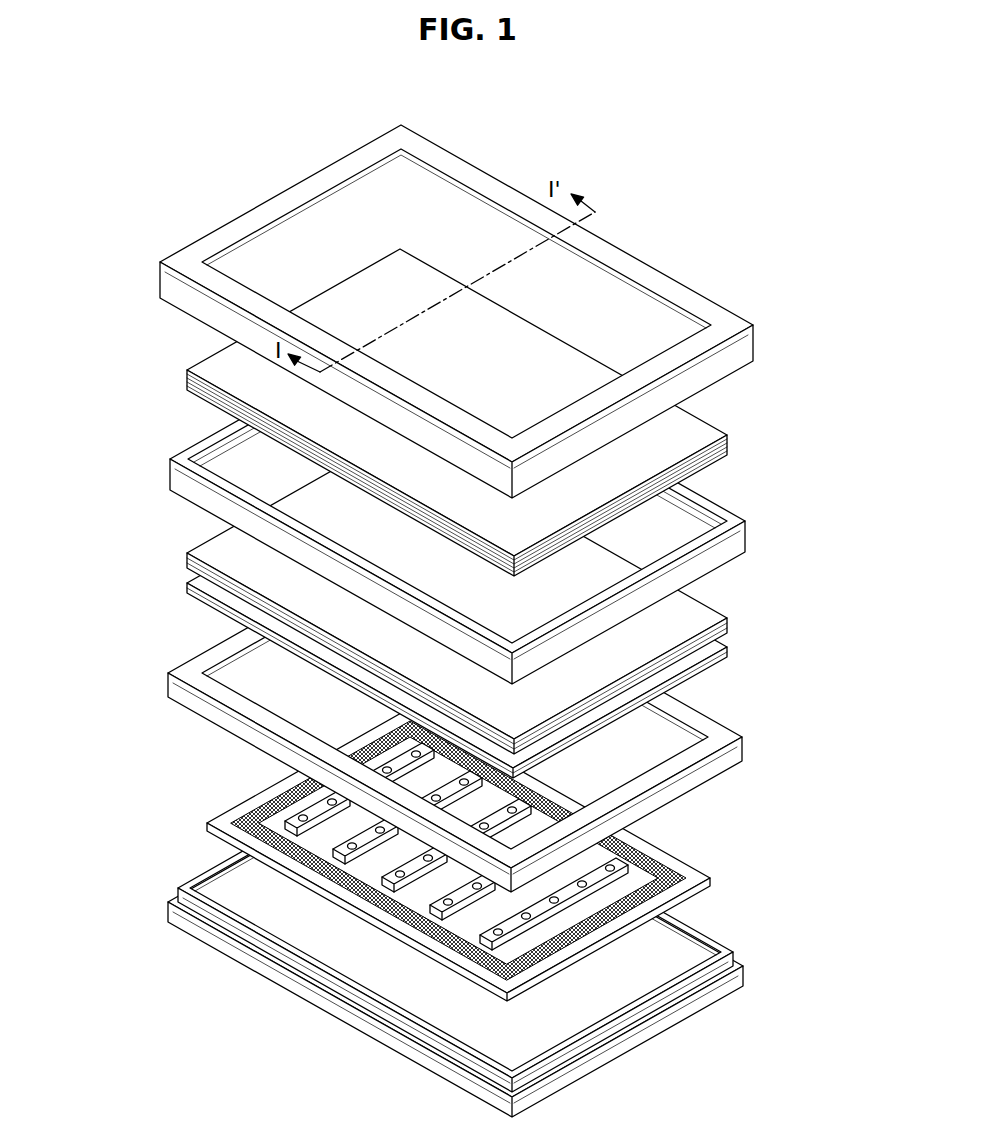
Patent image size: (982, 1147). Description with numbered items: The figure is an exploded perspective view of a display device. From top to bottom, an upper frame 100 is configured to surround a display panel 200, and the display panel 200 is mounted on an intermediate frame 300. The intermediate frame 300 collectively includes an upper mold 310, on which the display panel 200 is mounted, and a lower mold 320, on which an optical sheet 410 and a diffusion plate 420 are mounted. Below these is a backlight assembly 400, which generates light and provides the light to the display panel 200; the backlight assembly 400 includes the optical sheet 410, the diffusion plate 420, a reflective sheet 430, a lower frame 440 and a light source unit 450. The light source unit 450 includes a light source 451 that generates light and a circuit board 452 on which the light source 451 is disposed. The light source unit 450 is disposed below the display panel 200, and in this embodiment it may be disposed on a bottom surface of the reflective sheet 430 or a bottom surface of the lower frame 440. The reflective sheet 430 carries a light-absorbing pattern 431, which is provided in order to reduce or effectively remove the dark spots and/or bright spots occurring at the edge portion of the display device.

The upper frame 100 is at (163, 290).
The display panel 200 is at (217, 361).
The intermediate frame 300 is at (822, 540).
The upper mold 310 is at (738, 541).
The lower mold 320 is at (704, 722).
The backlight assembly 400 is at (101, 546).
The optical sheet 410 is at (186, 557).
The diffusion plate 420 is at (200, 596).
The reflective sheet 430 is at (687, 870).
The light-absorbing pattern 431 is at (643, 848).
The lower frame 440 is at (187, 927).
The light source unit 450 is at (160, 806).
The light source 451 is at (302, 815).
The circuit board 452 is at (258, 822).